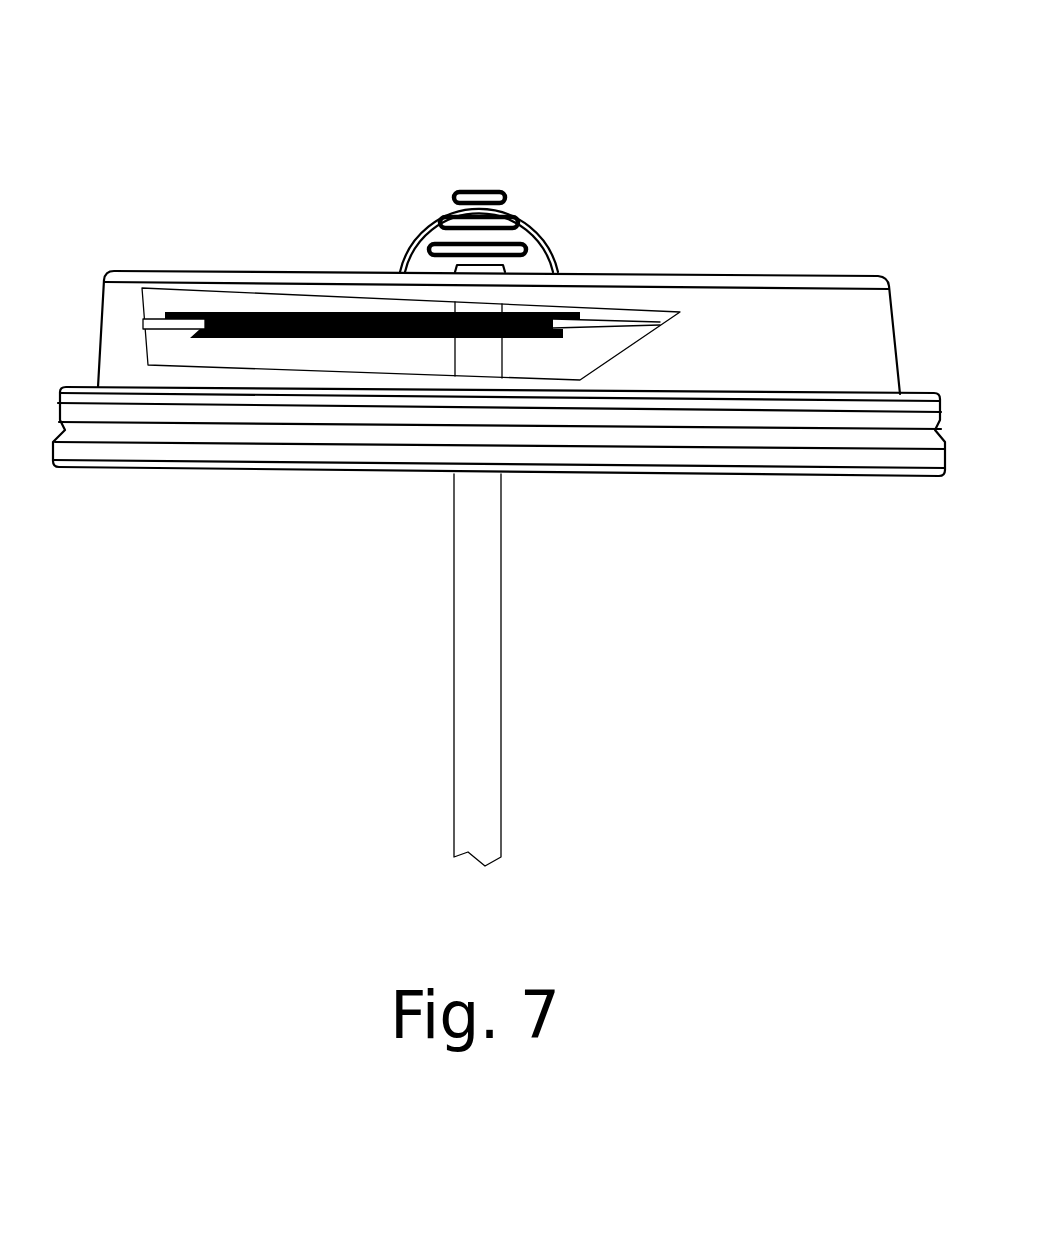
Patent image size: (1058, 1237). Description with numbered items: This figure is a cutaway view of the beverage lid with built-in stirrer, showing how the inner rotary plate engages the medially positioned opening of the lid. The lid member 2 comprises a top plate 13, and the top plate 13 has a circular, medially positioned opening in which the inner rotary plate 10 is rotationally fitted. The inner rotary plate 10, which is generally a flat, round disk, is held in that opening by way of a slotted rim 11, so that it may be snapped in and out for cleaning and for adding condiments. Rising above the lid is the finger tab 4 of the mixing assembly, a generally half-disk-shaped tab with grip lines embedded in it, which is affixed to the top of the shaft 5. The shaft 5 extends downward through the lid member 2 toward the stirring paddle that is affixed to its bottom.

The lid member 2 is at (737, 255).
The finger tab 4 is at (537, 185).
The shaft 5 is at (520, 747).
The inner rotary plate 10 is at (275, 303).
The slotted rim 11 is at (178, 302).
The top plate 13 is at (607, 338).